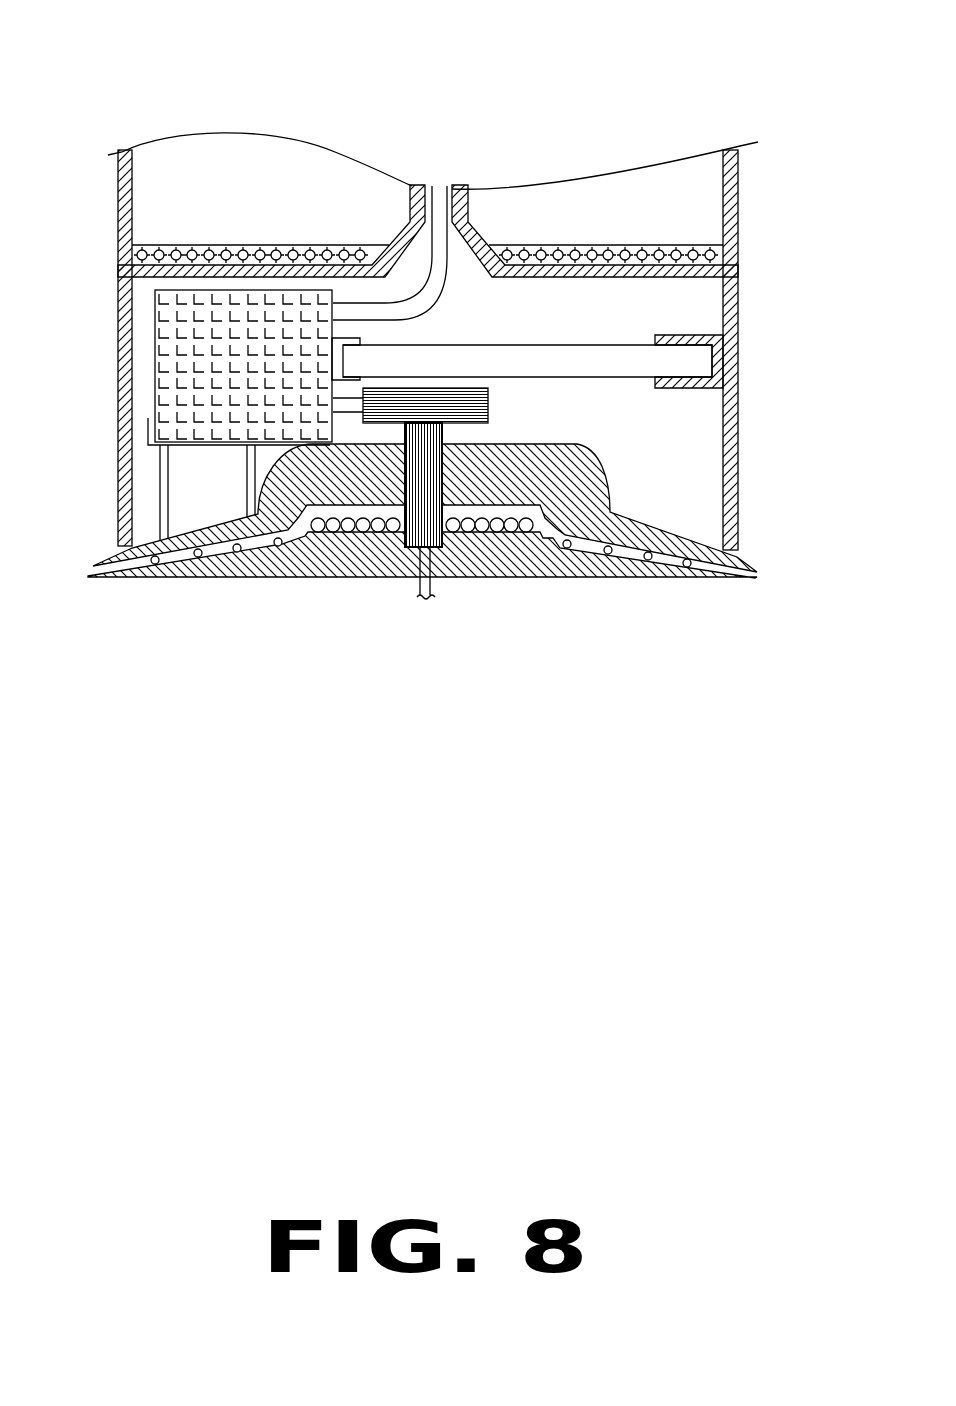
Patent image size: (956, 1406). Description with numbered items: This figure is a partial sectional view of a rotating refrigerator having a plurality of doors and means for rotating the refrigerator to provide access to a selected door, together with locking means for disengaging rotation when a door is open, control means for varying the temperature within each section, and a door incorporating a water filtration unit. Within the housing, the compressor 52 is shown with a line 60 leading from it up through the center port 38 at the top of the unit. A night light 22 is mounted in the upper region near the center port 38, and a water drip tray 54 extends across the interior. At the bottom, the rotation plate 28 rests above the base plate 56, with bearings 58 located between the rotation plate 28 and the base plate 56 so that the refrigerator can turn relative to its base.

The night light 22 is at (588, 252).
The rotation plate 28 is at (547, 515).
The center port 38 is at (453, 151).
The compressor 52 is at (247, 323).
The water drip tray 54 is at (617, 342).
The base plate 56 is at (493, 580).
The bearings 58 is at (380, 528).
The line 60 is at (447, 297).